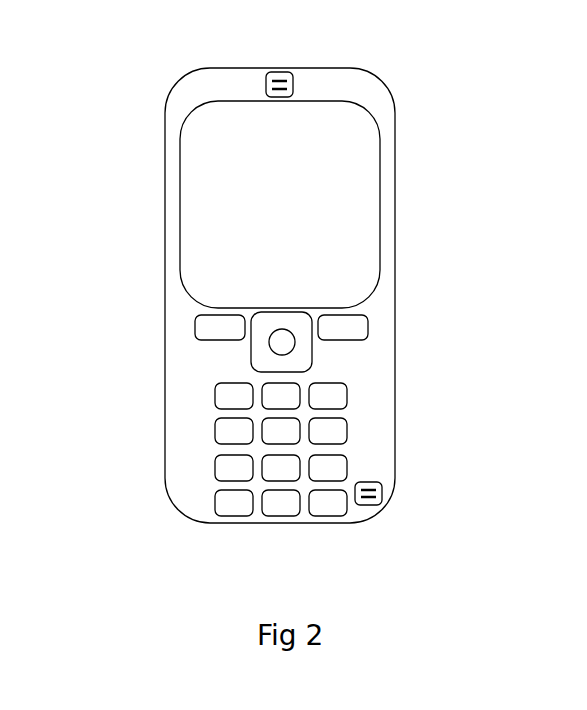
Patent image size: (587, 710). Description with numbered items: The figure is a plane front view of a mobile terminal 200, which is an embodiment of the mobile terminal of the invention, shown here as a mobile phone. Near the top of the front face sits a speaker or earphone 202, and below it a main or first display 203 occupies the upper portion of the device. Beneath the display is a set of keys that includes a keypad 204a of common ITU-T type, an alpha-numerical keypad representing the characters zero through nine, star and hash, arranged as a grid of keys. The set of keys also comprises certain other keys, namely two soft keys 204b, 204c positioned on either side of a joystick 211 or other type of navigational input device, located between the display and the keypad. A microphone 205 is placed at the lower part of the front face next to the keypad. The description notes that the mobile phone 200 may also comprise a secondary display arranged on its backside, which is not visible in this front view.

The mobile terminal 200 is at (148, 132).
The speaker or earphone 202 is at (276, 68).
The main or first display 203 is at (380, 192).
The keypad 204a is at (215, 398).
The soft key 204b is at (195, 330).
The soft key 204c is at (368, 332).
The microphone 205 is at (378, 502).
The joystick 211 is at (312, 348).